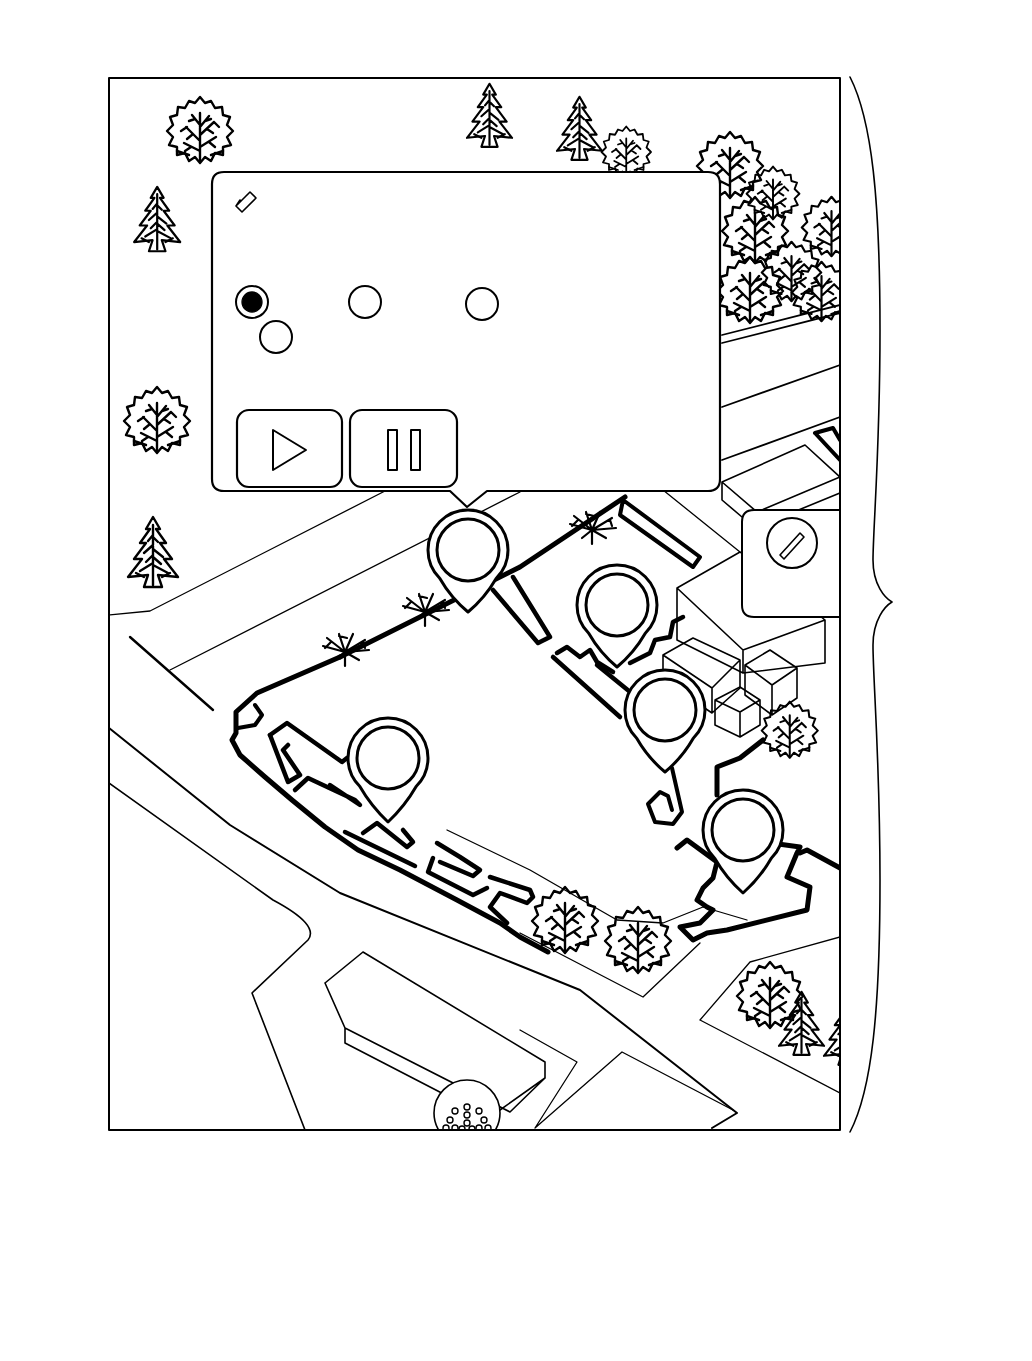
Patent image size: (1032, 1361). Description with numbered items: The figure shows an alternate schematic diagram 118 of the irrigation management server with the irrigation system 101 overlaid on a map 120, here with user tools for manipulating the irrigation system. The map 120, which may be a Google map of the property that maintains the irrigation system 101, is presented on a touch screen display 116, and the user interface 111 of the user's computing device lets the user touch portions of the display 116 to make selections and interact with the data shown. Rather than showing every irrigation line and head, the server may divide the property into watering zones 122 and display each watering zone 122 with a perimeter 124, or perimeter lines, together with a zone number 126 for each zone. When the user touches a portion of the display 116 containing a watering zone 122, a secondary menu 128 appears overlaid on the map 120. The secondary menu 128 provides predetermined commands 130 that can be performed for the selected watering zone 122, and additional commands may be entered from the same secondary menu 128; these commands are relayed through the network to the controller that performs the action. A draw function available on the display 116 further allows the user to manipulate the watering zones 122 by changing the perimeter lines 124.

The schematic diagram 118 is at (101, 31).
The touch screen display 116 is at (96, 219).
The predetermined commands 130 is at (236, 305).
The secondary menu 128 is at (250, 378).
The zone number 126 is at (440, 582).
The perimeter 124 is at (233, 767).
The irrigation system 101 is at (235, 800).
The watering zone 122 is at (325, 832).
The user interface 111 is at (410, 1118).
The map 120 is at (895, 604).